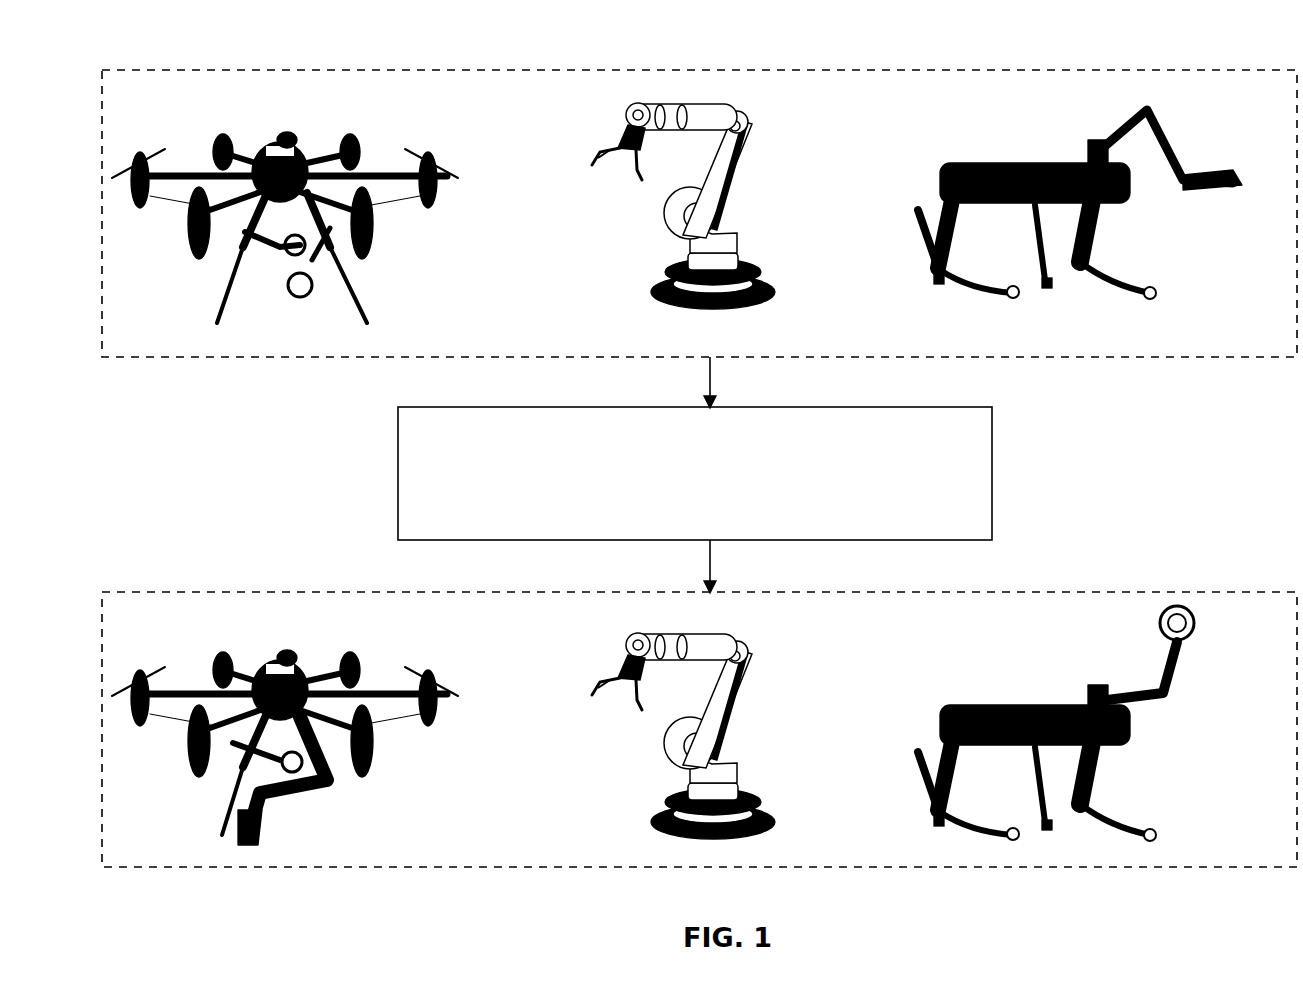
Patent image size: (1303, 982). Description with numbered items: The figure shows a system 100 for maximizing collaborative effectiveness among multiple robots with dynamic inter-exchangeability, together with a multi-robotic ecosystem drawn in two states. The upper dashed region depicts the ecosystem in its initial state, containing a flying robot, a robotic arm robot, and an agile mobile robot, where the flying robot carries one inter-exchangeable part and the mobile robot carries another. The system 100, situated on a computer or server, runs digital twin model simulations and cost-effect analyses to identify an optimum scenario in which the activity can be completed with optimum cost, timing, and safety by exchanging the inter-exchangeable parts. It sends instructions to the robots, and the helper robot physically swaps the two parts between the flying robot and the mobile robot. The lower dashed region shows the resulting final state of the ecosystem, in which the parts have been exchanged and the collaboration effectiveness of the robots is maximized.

The system for maximizing collaborative effectiveness among multi-robots 100 is at (992, 472).